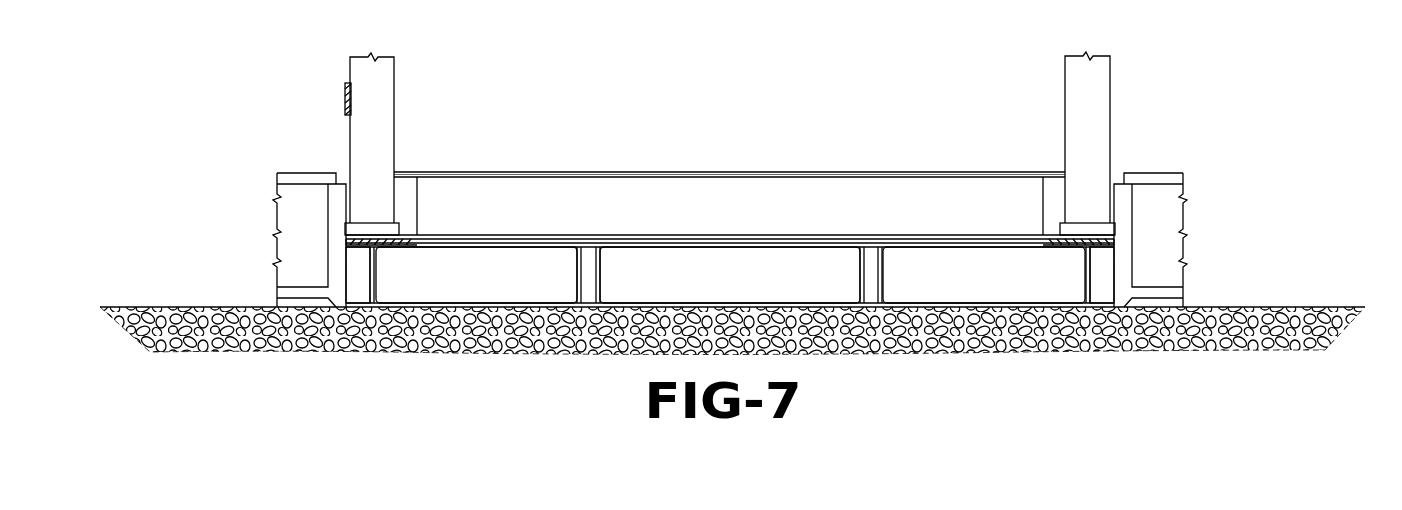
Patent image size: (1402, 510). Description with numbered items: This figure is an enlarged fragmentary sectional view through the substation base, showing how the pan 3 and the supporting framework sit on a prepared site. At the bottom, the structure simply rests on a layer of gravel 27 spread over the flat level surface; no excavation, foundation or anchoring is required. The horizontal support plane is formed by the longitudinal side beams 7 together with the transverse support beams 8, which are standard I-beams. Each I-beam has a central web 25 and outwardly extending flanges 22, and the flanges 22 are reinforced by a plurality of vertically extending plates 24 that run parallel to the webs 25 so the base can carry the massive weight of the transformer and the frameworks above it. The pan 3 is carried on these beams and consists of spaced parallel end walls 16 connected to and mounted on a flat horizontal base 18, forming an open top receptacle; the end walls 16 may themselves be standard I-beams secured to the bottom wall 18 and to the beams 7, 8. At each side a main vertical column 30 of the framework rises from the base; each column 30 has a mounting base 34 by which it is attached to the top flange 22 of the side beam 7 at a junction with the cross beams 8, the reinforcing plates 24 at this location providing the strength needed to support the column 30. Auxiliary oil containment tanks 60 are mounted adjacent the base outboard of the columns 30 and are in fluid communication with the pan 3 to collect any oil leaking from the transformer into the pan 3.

The pan 3 is at (512, 176).
The longitudinal side beam 7 is at (362, 262).
The transverse support beam 8 is at (775, 245).
The end wall 16 is at (590, 195).
The base 18 is at (666, 239).
The flange 22 is at (358, 242).
The vertically extending plate 24 is at (358, 284).
The web 25 is at (377, 280).
The layer of gravel 27 is at (177, 307).
The main vertical column 30 is at (358, 72).
The mounting base 34 is at (383, 227).
The auxiliary oil containment tank 60 is at (305, 190).